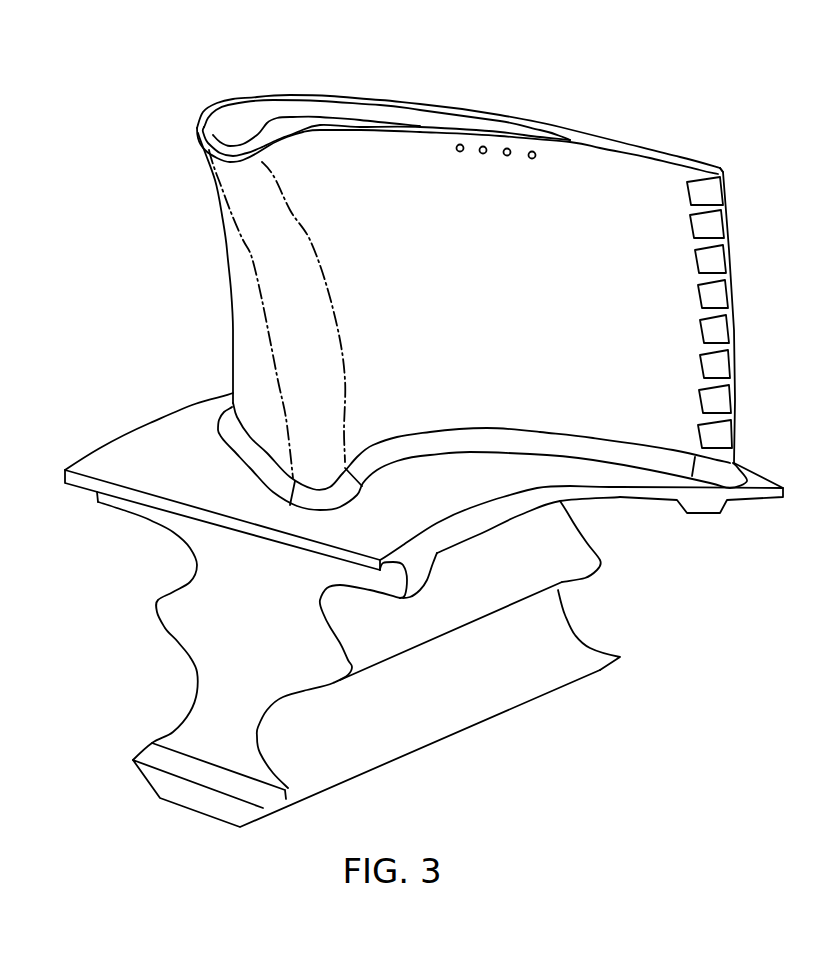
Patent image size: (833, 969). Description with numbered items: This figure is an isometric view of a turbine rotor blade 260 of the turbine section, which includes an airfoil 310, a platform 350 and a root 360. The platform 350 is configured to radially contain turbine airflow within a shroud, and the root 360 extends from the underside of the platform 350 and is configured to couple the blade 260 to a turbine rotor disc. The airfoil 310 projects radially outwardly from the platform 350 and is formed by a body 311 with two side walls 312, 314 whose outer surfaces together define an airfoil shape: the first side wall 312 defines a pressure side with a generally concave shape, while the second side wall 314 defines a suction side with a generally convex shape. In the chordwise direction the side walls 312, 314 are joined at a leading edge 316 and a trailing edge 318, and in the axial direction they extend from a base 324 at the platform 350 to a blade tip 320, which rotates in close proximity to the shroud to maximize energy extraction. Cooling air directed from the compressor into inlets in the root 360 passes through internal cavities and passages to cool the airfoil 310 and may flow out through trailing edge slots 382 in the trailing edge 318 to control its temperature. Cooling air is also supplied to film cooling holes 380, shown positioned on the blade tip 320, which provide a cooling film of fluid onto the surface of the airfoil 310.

The rotor blade 260 is at (688, 111).
The airfoil 310 is at (408, 157).
The body 311 is at (243, 278).
The first side wall 312 is at (472, 327).
The second side wall 314 is at (232, 315).
The leading edge 316 is at (242, 212).
The trailing edge 318 is at (731, 237).
The blade tip 320 is at (195, 123).
The base 324 is at (232, 432).
The platform 350 is at (440, 506).
The root 360 is at (217, 652).
The film cooling holes 380 is at (507, 157).
The trailing edge slots 382 is at (723, 340).